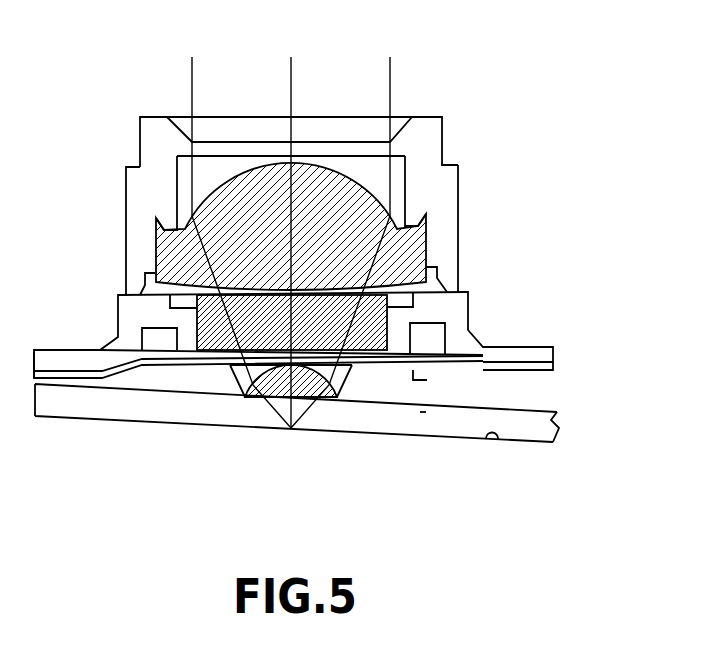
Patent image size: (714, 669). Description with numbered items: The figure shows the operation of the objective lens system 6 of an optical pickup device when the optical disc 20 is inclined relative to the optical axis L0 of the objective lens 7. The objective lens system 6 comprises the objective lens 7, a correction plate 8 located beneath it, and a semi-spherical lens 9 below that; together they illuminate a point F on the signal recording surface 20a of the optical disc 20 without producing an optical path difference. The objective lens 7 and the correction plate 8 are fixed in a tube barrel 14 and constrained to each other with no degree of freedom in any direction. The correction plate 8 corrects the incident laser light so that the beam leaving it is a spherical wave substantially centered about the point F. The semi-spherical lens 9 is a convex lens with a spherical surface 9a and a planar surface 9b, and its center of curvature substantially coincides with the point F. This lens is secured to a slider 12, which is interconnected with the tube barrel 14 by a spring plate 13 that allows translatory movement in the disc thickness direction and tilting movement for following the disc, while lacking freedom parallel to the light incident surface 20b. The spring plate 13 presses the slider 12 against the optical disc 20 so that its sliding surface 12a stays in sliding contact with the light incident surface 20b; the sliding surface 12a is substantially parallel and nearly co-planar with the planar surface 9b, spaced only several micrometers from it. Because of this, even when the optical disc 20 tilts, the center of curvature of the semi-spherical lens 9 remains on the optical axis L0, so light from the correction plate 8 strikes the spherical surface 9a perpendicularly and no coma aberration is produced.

The objective lens system 6 is at (121, 117).
The objective lens 7 is at (337, 172).
The correction plate 8 is at (387, 308).
The semi-spherical lens 9 is at (338, 396).
The spherical surface 9a is at (238, 380).
The planar surface 9b is at (250, 382).
The slider 12 is at (437, 385).
The sliding surface 12a is at (427, 385).
The spring plate 13 is at (118, 372).
The tube barrel 14 is at (130, 310).
The optical disc 20 is at (533, 423).
The signal recording surface 20a is at (495, 443).
The light incident surface 20b is at (424, 405).
The optical axis L0 is at (291, 229).
The point F is at (275, 449).